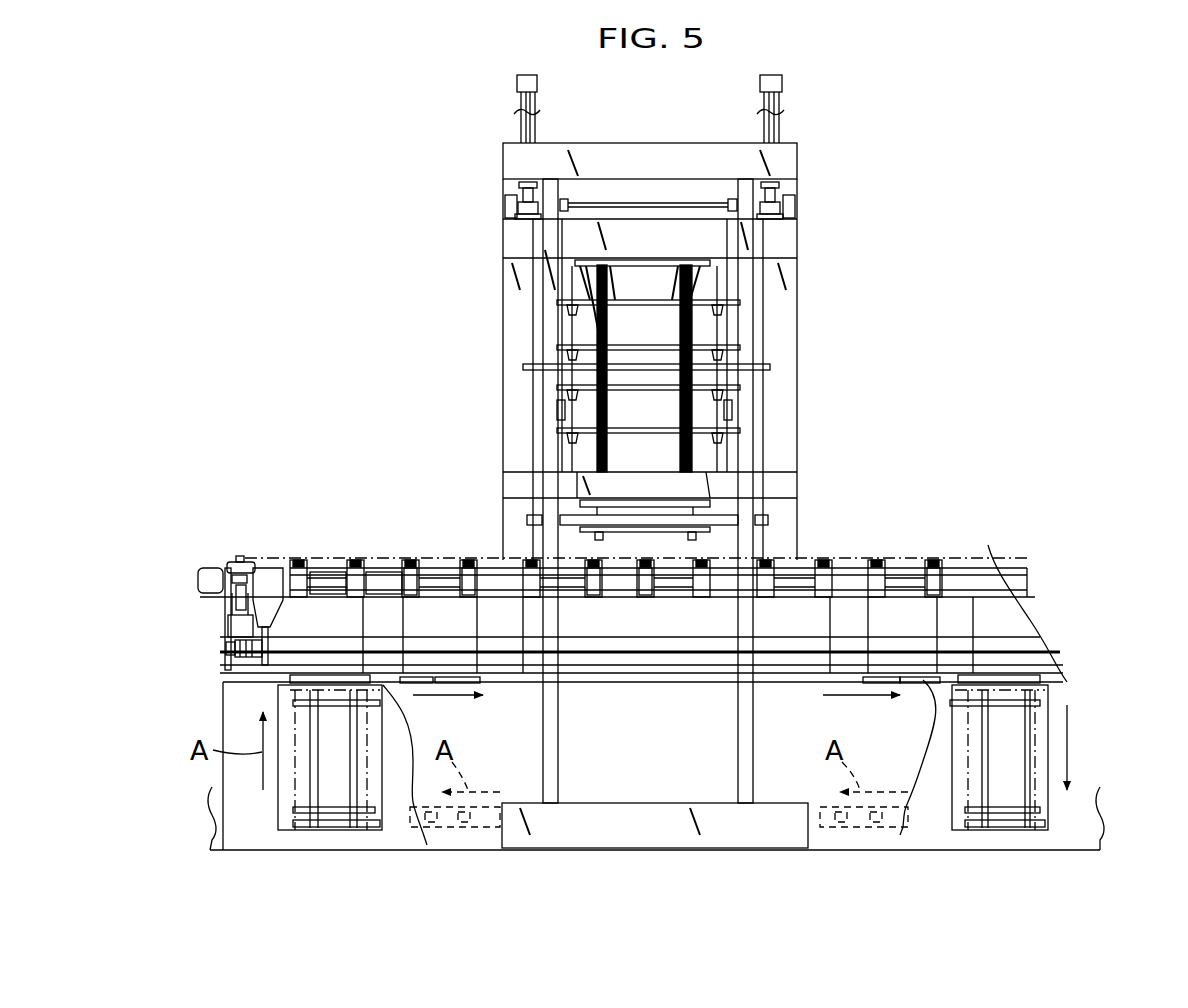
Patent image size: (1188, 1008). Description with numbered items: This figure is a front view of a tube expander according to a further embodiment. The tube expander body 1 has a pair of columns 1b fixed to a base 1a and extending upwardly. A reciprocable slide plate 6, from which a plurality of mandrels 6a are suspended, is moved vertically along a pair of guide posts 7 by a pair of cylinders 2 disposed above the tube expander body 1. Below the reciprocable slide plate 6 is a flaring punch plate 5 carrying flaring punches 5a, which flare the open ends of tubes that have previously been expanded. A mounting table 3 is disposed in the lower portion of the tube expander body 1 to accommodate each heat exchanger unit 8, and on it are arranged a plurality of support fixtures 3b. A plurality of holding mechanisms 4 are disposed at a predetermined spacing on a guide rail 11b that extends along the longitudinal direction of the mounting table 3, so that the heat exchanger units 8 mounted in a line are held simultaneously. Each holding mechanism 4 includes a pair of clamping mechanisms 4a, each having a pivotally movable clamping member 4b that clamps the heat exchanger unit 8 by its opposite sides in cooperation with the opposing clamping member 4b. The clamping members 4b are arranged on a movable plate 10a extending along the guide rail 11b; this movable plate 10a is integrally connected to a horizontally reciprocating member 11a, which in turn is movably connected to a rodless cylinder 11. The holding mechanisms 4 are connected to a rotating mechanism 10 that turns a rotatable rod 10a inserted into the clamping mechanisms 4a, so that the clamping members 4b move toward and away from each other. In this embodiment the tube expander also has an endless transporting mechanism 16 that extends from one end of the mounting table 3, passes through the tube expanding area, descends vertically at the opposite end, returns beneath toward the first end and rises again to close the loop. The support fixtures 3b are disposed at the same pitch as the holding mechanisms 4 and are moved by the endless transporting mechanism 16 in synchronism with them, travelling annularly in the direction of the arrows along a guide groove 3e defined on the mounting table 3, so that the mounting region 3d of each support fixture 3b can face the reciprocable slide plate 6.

The tube expander body 1 is at (800, 200).
The base 1a is at (715, 835).
The columns 1b is at (503, 408).
The cylinders 2 is at (760, 100).
The mounting table 3 is at (220, 700).
The support fixtures 3b is at (1042, 672).
The mounting region 3d is at (905, 665).
The guide groove 3e is at (1042, 708).
The holding mechanisms 4 is at (287, 562).
The clamping mechanisms 4a is at (415, 590).
The clamping member 4b is at (478, 592).
The flaring punch plate 5 is at (792, 504).
The flaring punches 5a is at (598, 530).
The reciprocable slide plate 6 is at (510, 238).
The mandrels 6a is at (715, 402).
The guide posts 7 is at (545, 325).
The heat exchanger unit 8 is at (300, 560).
The rotating mechanism 10 is at (222, 572).
The movable plate 10a is at (378, 572).
The rodless cylinder 11 is at (235, 655).
The horizontally reciprocating member 11a is at (275, 600).
The guide rail 11b is at (325, 570).
The endless transporting mechanism 16 is at (252, 840).